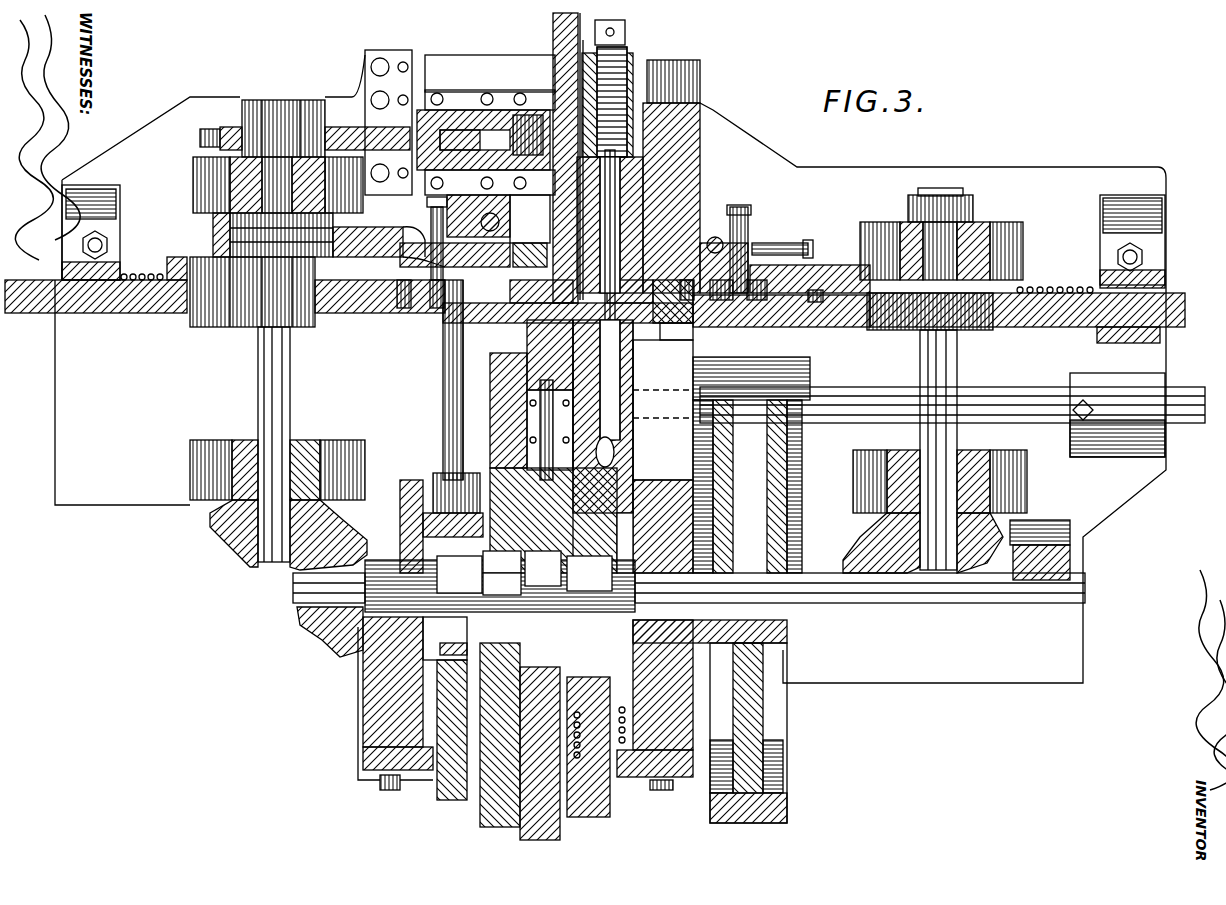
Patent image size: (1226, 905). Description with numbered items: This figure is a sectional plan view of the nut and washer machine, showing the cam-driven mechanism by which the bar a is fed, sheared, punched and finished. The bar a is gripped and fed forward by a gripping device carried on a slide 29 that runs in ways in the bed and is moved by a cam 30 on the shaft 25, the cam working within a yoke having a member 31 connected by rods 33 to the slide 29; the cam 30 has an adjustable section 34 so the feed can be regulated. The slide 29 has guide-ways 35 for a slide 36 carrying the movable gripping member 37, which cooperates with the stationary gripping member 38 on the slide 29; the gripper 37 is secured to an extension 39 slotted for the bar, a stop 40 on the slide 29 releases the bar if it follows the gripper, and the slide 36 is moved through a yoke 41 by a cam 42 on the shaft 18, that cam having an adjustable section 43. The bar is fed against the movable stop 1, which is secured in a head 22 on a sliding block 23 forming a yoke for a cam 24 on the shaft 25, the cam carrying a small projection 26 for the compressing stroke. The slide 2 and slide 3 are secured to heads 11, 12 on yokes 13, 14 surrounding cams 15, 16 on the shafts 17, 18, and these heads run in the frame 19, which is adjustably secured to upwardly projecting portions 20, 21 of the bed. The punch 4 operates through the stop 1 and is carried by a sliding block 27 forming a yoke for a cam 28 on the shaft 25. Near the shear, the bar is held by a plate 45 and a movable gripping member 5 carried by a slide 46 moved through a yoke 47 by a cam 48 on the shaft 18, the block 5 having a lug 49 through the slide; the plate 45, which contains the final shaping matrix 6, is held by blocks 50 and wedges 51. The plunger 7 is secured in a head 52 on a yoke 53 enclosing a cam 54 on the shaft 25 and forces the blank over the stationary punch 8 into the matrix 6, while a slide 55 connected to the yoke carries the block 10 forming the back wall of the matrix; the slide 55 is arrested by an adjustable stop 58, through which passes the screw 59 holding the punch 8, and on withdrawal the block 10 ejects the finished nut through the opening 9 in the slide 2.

The movable stop 1 is at (535, 348).
The slide 2 is at (752, 325).
The slide 3 is at (450, 335).
The punch 4 is at (530, 420).
The movable gripping member 5 is at (595, 301).
The final shaping matrix 6 is at (618, 333).
The plunger 7 is at (593, 340).
The stationary punch 8 is at (615, 240).
The opening 9 is at (625, 320).
The plunger block 10 is at (690, 213).
The head 11 is at (792, 322).
The head 12 is at (395, 325).
The yoke 13 is at (1003, 325).
The yoke 14 is at (175, 315).
The cam 15 is at (898, 330).
The cam 16 is at (240, 320).
The shaft 17 is at (957, 375).
The shaft 18 is at (258, 400).
The frame 19 is at (808, 285).
The upwardly projecting portion 20 is at (693, 142).
The upwardly projecting portion 21 is at (427, 210).
The head 22 is at (510, 372).
The sliding block 23 is at (495, 430).
The cam 24 is at (502, 583).
The shaft 25 is at (820, 575).
The projection 26 is at (502, 561).
The sliding block 27 is at (560, 490).
The cam 28 is at (543, 568).
The slide 29 is at (445, 88).
The cam 30 is at (459, 574).
The yoke member 31 is at (430, 505).
The rod 33 is at (443, 390).
The adjustable section 34 is at (440, 648).
The guide-way 35 is at (467, 98).
The slide 36 is at (500, 105).
The movable gripping member 37 is at (522, 115).
The stationary gripping member 38 is at (430, 675).
The extension 39 is at (498, 217).
The stop 40 is at (553, 75).
The yoke 41 is at (335, 125).
The cam 42 is at (258, 103).
The adjustable section 43 is at (320, 103).
The plate 45 is at (676, 336).
The slide 46 is at (385, 262).
The yoke 47 is at (213, 228).
The cam 48 is at (240, 238).
The lug 49 is at (530, 244).
The block 50 is at (718, 325).
The wedge 51 is at (705, 245).
The head 52 is at (625, 430).
The yoke 53 is at (598, 520).
The cam 54 is at (589, 573).
The slide 55 is at (700, 185).
The adjustable stop 58 is at (630, 80).
The screw 59 is at (625, 32).
The bar a is at (553, 28).